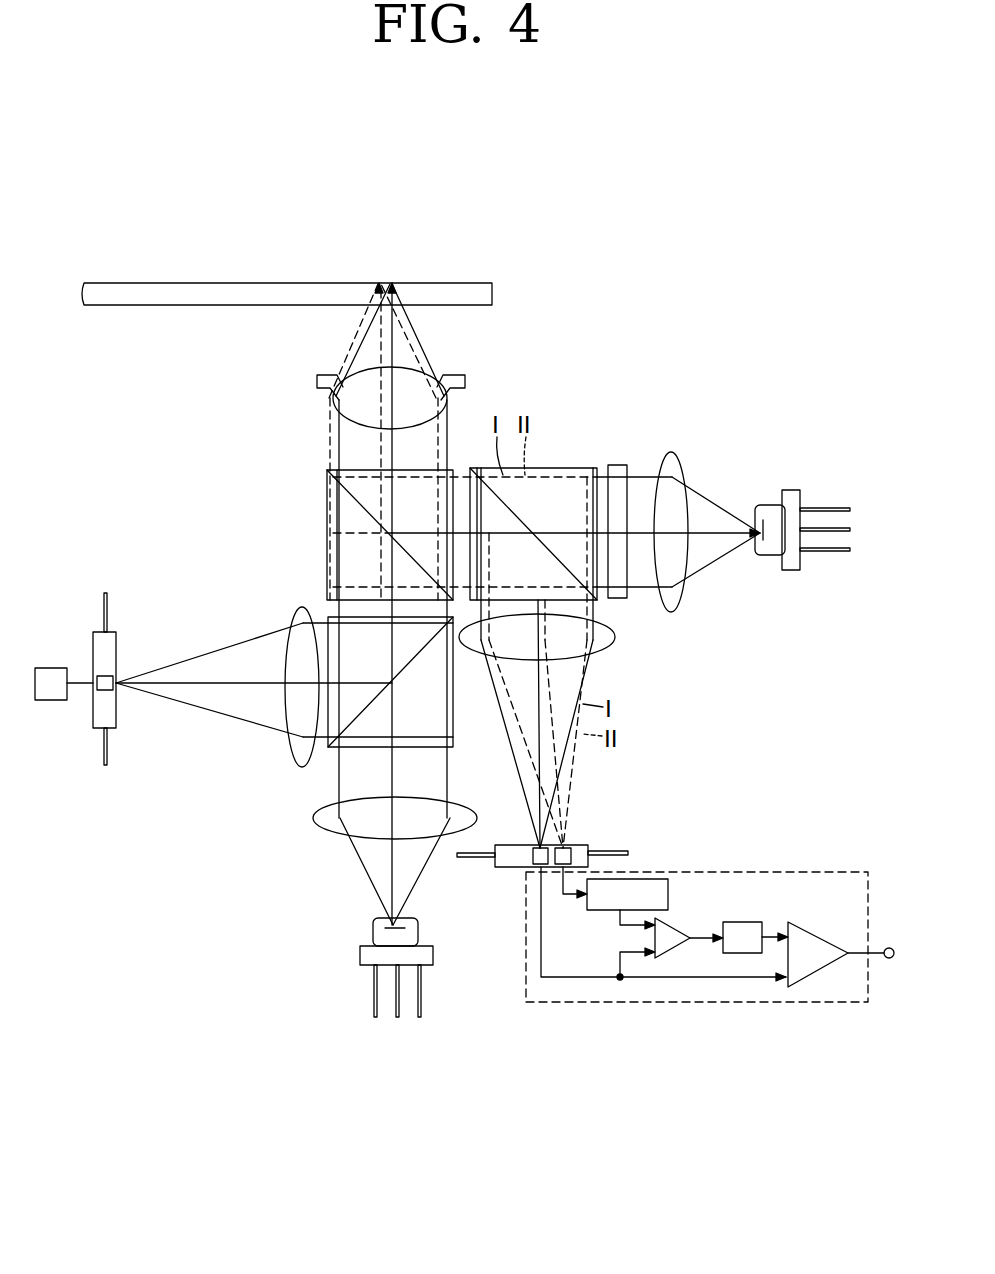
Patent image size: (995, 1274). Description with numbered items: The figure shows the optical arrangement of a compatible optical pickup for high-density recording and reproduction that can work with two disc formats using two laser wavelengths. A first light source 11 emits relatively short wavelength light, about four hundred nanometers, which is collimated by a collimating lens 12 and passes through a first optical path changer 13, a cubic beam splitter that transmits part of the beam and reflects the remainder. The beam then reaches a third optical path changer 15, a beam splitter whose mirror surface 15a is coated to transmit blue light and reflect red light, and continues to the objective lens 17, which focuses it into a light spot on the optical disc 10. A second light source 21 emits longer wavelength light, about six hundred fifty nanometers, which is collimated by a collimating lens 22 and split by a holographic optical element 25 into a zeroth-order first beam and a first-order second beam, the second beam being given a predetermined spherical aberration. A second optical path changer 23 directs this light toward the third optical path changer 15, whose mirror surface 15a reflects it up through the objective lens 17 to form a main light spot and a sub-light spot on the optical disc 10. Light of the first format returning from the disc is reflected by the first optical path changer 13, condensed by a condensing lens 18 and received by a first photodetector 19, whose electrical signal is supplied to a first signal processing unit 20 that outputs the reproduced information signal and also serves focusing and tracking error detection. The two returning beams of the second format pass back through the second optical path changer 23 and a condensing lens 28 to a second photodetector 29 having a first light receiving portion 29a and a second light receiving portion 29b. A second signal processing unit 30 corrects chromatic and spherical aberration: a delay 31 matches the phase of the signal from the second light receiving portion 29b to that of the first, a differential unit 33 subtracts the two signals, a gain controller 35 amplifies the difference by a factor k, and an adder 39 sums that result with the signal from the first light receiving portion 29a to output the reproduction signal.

The optical disc 10 is at (223, 307).
The first light source 11 is at (375, 932).
The collimating lens 12 is at (322, 826).
The first optical path changer 13 is at (451, 745).
The third optical path changer 15 is at (328, 523).
The mirror surface 15a is at (370, 518).
The objective lens 17 is at (317, 377).
The condensing lens 18 is at (297, 753).
The first photodetector 19 is at (113, 643).
The first signal processing unit 20 is at (50, 667).
The second light source 21 is at (791, 490).
The collimating lens 22 is at (673, 458).
The second optical path changer 23 is at (567, 473).
The holographic optical element 25 is at (622, 465).
The condensing lens 28 is at (607, 640).
The second photodetector 29 is at (579, 834).
The first light receiving portion 29a is at (530, 866).
The second light receiving portion 29b is at (573, 848).
The second signal processing unit 30 is at (578, 1003).
The delay 31 is at (668, 893).
The differential unit 33 is at (673, 950).
The gain controller 35 is at (743, 953).
The adder 39 is at (812, 977).